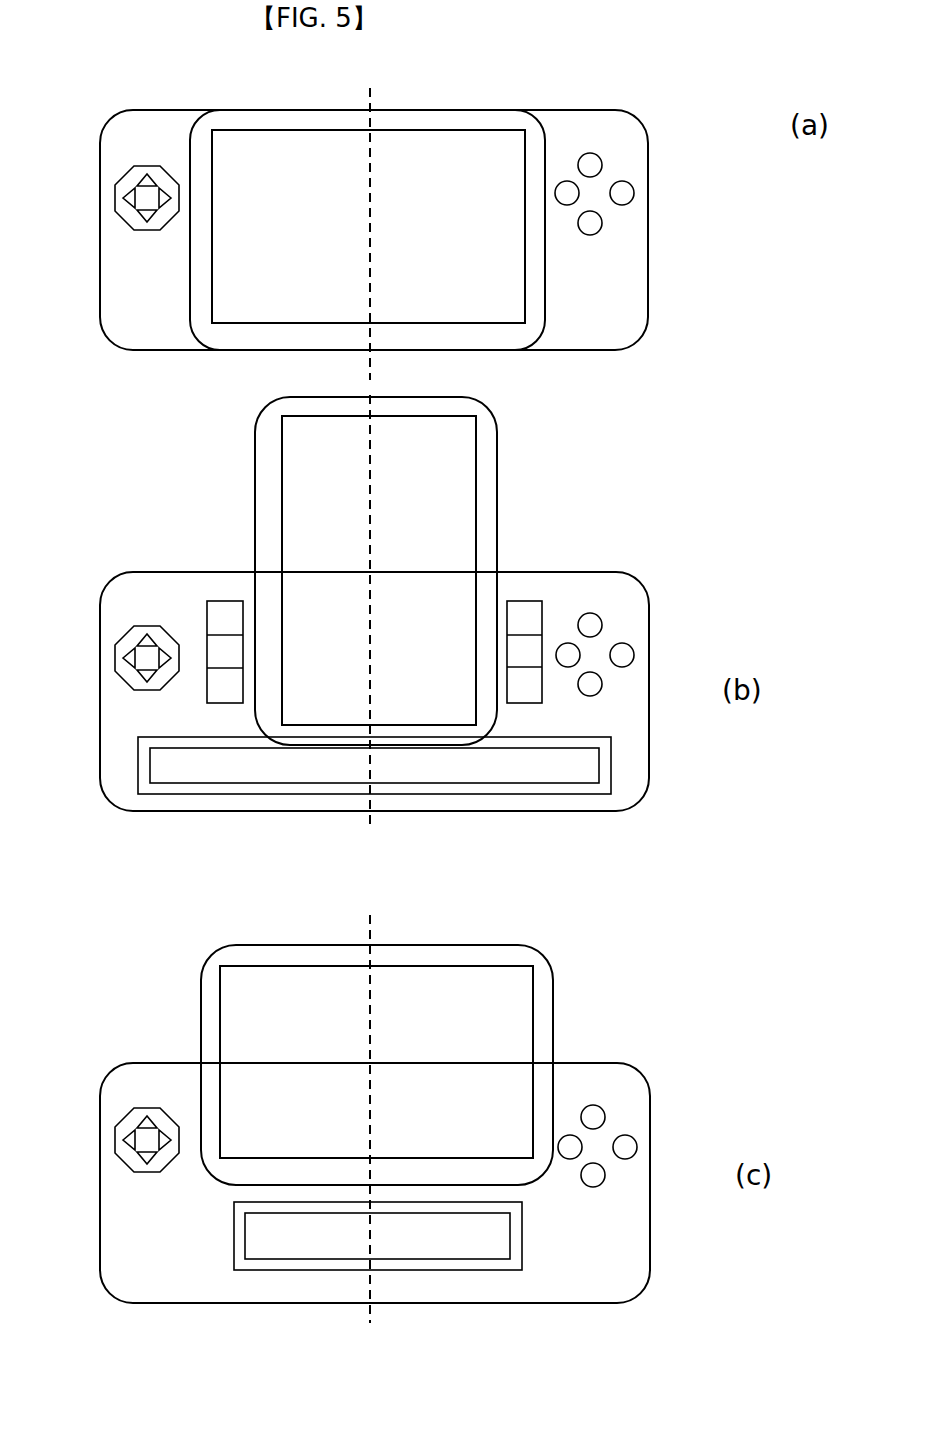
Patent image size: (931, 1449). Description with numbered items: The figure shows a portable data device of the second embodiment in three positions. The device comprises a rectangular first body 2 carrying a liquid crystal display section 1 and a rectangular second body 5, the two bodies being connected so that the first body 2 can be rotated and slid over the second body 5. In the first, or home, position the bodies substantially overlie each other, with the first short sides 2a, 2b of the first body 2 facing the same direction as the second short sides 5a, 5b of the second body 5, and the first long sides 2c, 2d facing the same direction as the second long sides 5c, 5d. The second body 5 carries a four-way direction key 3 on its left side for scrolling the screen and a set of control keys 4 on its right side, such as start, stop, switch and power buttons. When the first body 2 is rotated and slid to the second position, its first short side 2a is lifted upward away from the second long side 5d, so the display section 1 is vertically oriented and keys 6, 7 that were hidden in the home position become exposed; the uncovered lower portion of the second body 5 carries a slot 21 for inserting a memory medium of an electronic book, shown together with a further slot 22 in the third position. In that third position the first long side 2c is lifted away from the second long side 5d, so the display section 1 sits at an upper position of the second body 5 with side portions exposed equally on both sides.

The liquid crystal display section 1 is at (410, 603).
The first body 2 is at (378, 616).
The first short side 2a is at (552, 302).
The first short side 2b is at (197, 262).
The first long side 2c is at (277, 112).
The first long side 2d is at (290, 350).
The direction key 3 is at (140, 1140).
The set of control keys 4 is at (612, 612).
The second body 5 is at (406, 706).
The second short side 5a is at (648, 190).
The second short side 5b is at (104, 208).
The second long side 5c is at (580, 74).
The second long side 5d is at (540, 352).
The key 6 is at (535, 597).
The key 7 is at (216, 592).
The slot 21 is at (374, 807).
The slot 22 is at (378, 1283).